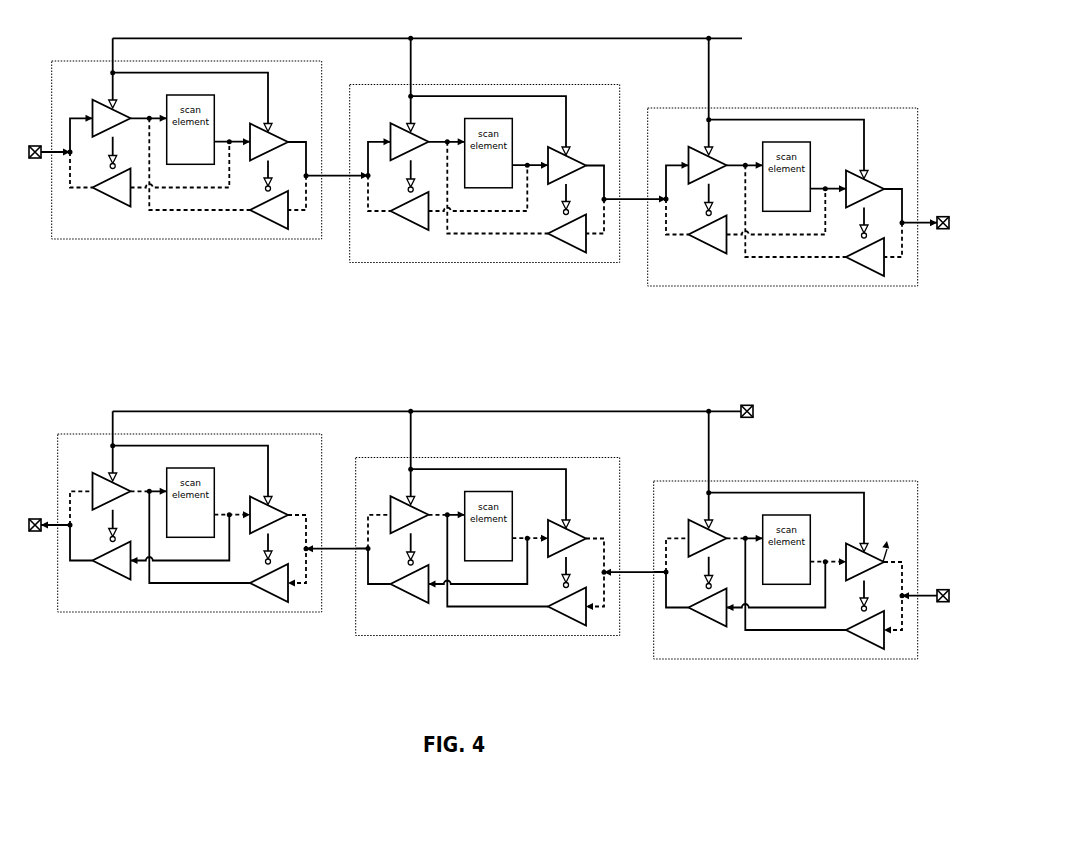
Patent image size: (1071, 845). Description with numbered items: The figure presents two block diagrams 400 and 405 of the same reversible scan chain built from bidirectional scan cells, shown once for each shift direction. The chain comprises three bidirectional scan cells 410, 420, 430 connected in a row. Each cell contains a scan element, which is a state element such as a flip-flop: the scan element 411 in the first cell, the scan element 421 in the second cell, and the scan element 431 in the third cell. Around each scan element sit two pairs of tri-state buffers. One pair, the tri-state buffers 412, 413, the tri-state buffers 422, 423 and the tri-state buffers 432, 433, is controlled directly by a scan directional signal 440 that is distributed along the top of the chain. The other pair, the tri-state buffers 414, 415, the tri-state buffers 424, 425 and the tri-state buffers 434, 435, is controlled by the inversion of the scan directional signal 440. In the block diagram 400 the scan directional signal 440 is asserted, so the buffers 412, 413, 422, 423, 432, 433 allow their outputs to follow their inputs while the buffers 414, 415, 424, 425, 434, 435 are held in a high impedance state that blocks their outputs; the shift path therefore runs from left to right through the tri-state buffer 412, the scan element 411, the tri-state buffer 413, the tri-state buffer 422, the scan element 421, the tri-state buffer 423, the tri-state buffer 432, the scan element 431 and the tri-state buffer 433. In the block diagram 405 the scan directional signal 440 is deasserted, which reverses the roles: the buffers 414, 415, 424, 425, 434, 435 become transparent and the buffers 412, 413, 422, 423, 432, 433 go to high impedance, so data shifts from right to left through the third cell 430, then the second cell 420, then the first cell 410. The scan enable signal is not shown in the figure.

The block diagram 400 is at (104, 289).
The block diagram 405 is at (105, 670).
The bidirectional scan cell 410 is at (175, 325).
The scan element 411 is at (191, 316).
The tri-state buffer 412 is at (112, 305).
The tri-state buffer 413 is at (269, 329).
The tri-state buffer 414 is at (112, 374).
The tri-state buffer 415 is at (269, 396).
The bidirectional scan cell 420 is at (485, 336).
The scan element 421 is at (489, 340).
The tri-state buffer 422 is at (410, 328).
The tri-state buffer 423 is at (567, 352).
The tri-state buffer 424 is at (410, 397).
The tri-state buffer 425 is at (567, 420).
The bidirectional scan cell 430 is at (798, 348).
The scan element 431 is at (787, 363).
The tri-state buffer 432 is at (708, 352).
The tri-state buffer 433 is at (865, 376).
The tri-state buffer 434 is at (708, 421).
The tri-state buffer 435 is at (865, 443).
The scan directional signal 440 is at (762, 38).